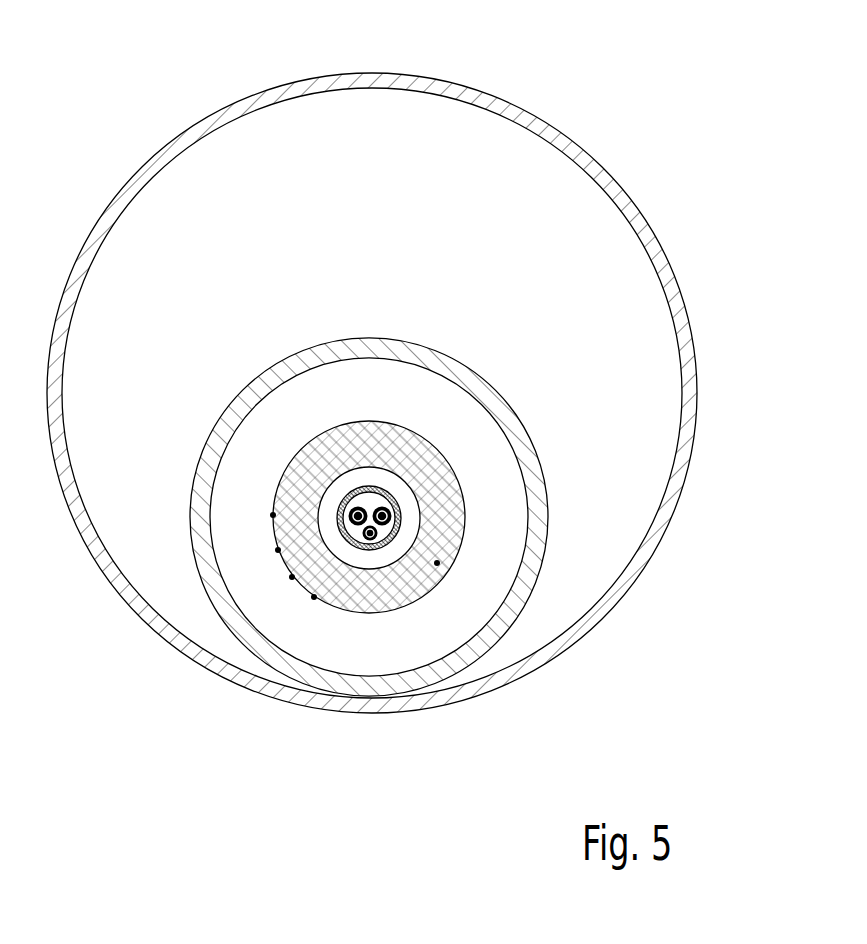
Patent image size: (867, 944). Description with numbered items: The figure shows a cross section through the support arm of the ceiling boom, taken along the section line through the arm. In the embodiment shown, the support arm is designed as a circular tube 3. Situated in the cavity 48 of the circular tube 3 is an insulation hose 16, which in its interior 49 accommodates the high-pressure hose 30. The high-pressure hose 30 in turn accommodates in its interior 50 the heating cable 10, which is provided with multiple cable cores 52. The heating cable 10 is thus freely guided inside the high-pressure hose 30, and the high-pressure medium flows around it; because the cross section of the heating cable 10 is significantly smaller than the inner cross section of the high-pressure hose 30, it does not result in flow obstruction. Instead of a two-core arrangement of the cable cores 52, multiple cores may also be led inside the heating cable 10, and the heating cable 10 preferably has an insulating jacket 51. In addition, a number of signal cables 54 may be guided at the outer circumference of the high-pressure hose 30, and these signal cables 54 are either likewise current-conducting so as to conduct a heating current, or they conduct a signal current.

The circular tube 3 is at (513, 109).
The cavity 48 is at (539, 202).
The insulation hose 16 is at (523, 436).
The interior 49 is at (515, 496).
The interior 50 is at (381, 475).
The insulating jacket 51 is at (360, 488).
The cable cores 52 is at (336, 495).
The signal cables 54 is at (314, 597).
The heating cable 10 is at (375, 552).
The high-pressure hose 30 is at (439, 566).